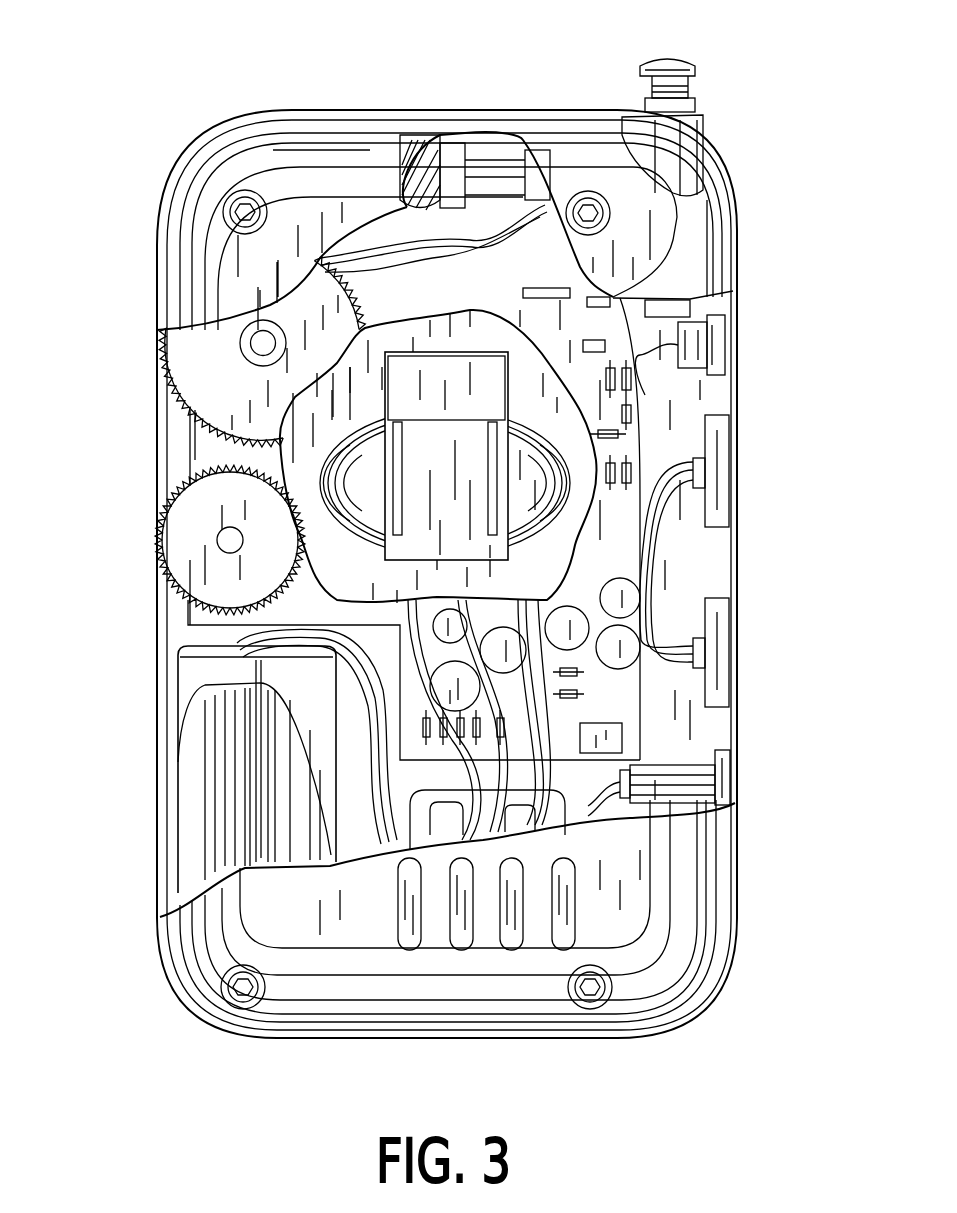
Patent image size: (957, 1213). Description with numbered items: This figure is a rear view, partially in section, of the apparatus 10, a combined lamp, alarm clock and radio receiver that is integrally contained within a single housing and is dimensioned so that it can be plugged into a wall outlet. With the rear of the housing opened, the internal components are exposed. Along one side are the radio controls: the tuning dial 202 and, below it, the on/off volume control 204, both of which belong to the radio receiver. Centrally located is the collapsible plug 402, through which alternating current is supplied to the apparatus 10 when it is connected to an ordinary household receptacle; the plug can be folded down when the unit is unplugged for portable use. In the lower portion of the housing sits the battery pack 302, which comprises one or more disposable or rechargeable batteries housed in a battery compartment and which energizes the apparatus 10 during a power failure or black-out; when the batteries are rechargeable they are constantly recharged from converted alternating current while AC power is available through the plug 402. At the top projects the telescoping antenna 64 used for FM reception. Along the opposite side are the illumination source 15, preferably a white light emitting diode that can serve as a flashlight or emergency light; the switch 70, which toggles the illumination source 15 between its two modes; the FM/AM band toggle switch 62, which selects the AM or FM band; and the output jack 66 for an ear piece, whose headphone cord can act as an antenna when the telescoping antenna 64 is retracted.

The apparatus 10 is at (316, 66).
The telescoping antenna 64 is at (677, 62).
The illumination source 15 is at (738, 345).
The switch 70 is at (733, 468).
The FM/AM band toggle switch 62 is at (733, 642).
The output jack 66 is at (733, 783).
The tuning dial 202 is at (160, 372).
The on/off volume control 204 is at (160, 540).
The collapsible plug 402 is at (393, 465).
The battery pack 302 is at (215, 806).